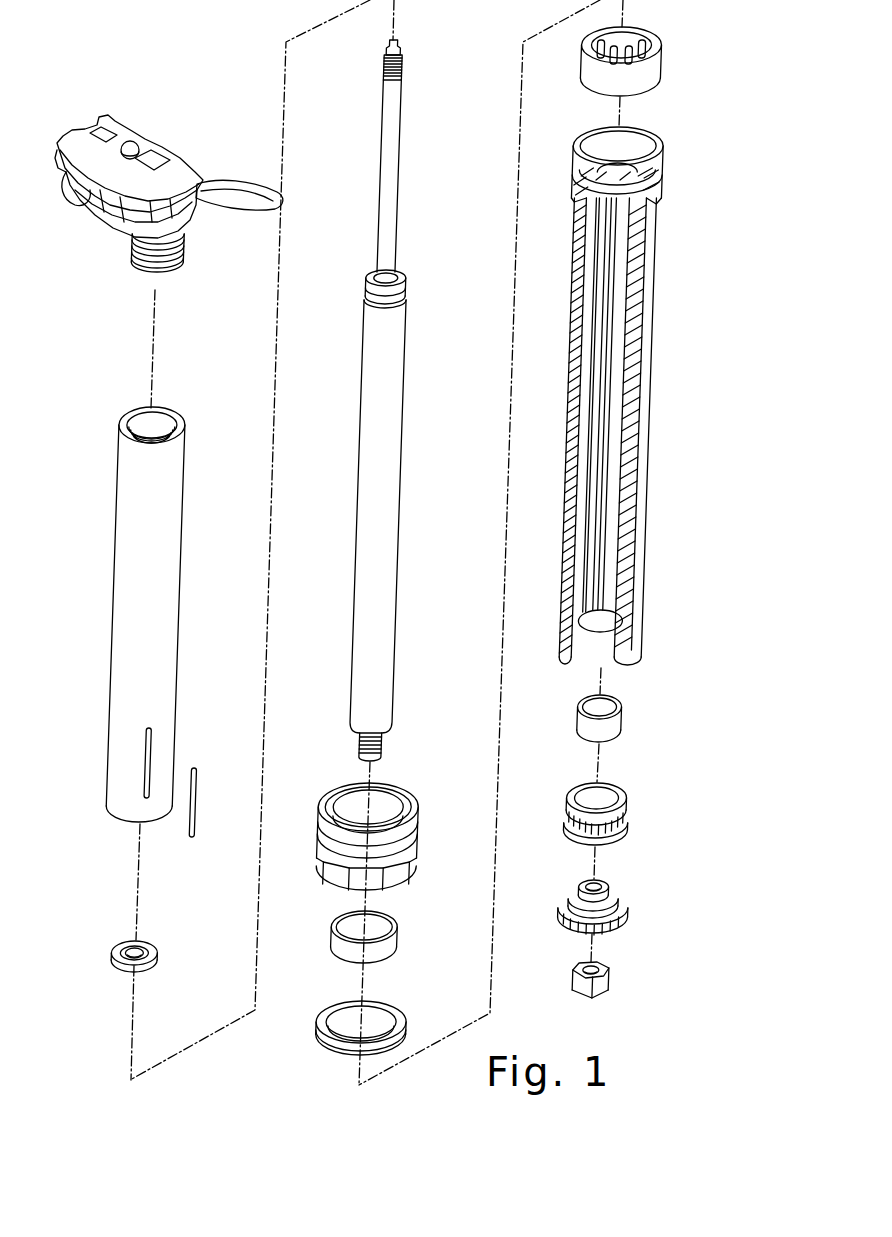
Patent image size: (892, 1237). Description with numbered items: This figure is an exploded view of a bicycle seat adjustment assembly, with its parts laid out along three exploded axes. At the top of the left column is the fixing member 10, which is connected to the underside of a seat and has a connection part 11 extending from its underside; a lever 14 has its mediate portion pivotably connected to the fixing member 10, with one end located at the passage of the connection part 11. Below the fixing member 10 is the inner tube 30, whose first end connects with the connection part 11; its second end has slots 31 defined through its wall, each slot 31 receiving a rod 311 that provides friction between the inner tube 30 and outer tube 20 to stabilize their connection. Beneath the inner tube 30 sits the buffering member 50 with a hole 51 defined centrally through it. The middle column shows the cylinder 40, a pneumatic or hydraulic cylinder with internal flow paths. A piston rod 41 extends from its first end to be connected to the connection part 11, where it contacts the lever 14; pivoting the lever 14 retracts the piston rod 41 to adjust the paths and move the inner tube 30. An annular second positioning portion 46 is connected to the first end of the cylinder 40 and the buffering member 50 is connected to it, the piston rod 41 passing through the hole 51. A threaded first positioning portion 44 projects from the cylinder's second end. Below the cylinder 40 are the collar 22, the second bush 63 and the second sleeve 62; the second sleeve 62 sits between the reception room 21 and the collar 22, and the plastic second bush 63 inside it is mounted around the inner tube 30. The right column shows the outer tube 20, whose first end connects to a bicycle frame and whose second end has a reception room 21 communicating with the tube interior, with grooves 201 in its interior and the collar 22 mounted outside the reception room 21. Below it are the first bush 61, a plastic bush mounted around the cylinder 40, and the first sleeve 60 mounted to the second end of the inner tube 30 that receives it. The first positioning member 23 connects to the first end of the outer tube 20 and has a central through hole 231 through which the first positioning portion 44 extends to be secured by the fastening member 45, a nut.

The fixing member 10 is at (88, 105).
The connection part 11 is at (132, 258).
The lever 14 is at (248, 185).
The outer tube 20 is at (647, 373).
The grooves 201 is at (600, 437).
The reception room 21 is at (645, 153).
The collar 22 is at (417, 828).
The first positioning member 23 is at (620, 898).
The through hole 231 is at (607, 870).
The inner tube 30 is at (130, 633).
The slot 31 is at (150, 748).
The rod 311 is at (197, 823).
The cylinder 40 is at (392, 548).
The piston rod 41 is at (388, 173).
The first positioning portion 44 is at (383, 750).
The fastening member 45 is at (603, 987).
The second positioning portion 46 is at (400, 267).
The buffering member 50 is at (130, 967).
The hole 51 is at (125, 943).
The first sleeve 60 is at (633, 817).
The first bush 61 is at (620, 723).
The second sleeve 62 is at (398, 1023).
The second bush 63 is at (395, 940).